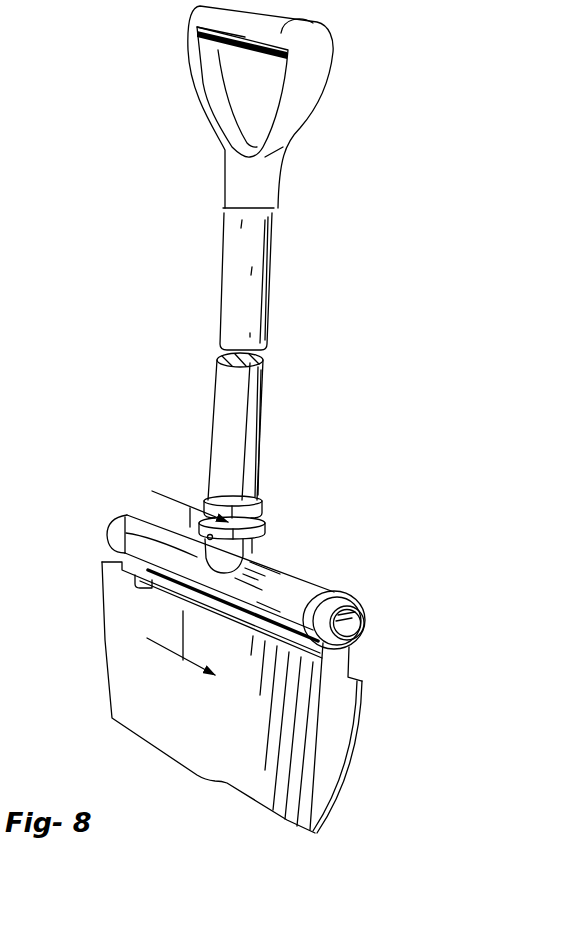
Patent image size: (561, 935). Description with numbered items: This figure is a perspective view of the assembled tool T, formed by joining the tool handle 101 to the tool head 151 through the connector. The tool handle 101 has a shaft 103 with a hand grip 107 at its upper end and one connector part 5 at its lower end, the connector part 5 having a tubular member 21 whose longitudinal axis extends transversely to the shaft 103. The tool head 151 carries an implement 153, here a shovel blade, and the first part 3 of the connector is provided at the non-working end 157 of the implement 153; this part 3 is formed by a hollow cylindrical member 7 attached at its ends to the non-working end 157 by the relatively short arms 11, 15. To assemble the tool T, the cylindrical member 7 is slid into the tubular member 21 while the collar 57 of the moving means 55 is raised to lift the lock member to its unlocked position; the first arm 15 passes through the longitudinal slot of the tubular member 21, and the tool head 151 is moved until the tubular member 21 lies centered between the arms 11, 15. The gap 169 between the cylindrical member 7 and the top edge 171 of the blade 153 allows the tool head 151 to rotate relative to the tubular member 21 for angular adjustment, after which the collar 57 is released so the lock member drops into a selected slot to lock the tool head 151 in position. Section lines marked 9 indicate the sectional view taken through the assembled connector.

The tool T is at (132, 233).
The tool handle 101 is at (223, 255).
The hand grip 107 is at (284, 34).
The shaft 103 is at (252, 398).
The moving means 55 is at (268, 527).
The collar 57 is at (247, 538).
The connector part 5 is at (313, 576).
The tubular member 21 is at (137, 532).
The first part of the connector 3 is at (352, 594).
The cylindrical member 7 is at (362, 612).
The arm 11 is at (330, 660).
The first arm 15 is at (122, 564).
The top edge of the blade 171 is at (138, 576).
The non-working end of the implement 157 is at (157, 590).
The gap 169 is at (186, 596).
The section line 9- 9 is at (187, 580).
The implement 153 is at (345, 722).
The tool head 151 is at (356, 786).